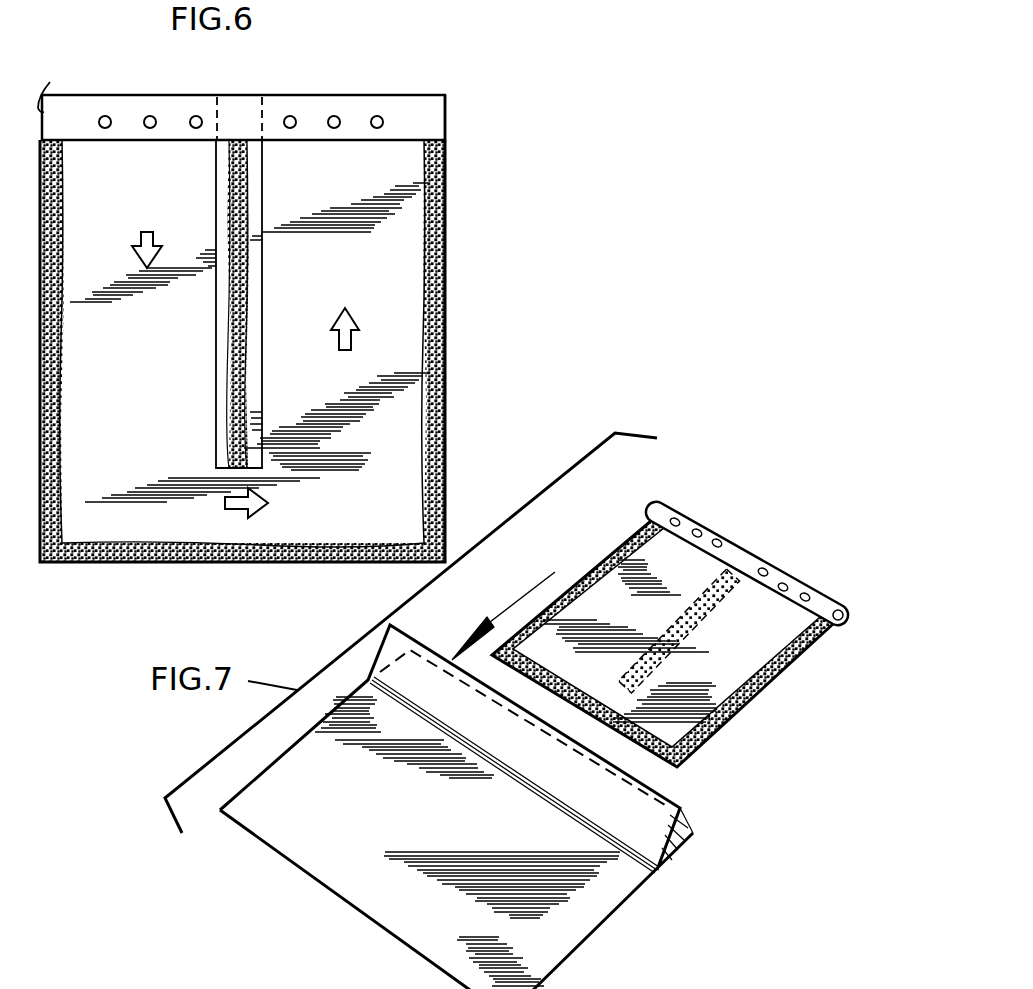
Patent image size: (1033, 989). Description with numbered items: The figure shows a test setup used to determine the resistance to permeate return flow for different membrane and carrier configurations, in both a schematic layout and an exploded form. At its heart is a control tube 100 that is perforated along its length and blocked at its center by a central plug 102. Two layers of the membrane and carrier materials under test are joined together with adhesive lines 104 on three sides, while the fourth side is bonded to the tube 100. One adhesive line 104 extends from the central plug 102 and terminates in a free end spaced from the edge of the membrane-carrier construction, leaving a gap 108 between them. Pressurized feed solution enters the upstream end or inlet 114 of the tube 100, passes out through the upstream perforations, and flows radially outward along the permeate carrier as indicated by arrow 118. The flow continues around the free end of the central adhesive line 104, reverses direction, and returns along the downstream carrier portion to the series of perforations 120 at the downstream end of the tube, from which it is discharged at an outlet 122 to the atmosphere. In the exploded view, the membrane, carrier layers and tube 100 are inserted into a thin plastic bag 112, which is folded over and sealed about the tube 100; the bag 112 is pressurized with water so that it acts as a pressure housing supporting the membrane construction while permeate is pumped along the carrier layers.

In FIG. 6, the control tube 100 is at (155, 102).
In FIG. 7, the control tube 100 is at (750, 552).
In FIG. 6, the central plug 102 is at (248, 104).
In FIG. 6, the adhesive lines 104 is at (243, 276).
In FIG. 7, the adhesive lines 104 is at (690, 643).
In FIG. 6, the gap 108 is at (226, 503).
In FIG. 7, the bag 112 is at (565, 940).
In FIG. 6, the inlet 114 is at (65, 84).
In FIG. 6, the arrow 118 is at (140, 235).
In FIG. 6, the perforations 120 is at (338, 113).
In FIG. 6, the outlet 122 is at (449, 113).
In FIG. 7, the outlet 122 is at (839, 626).